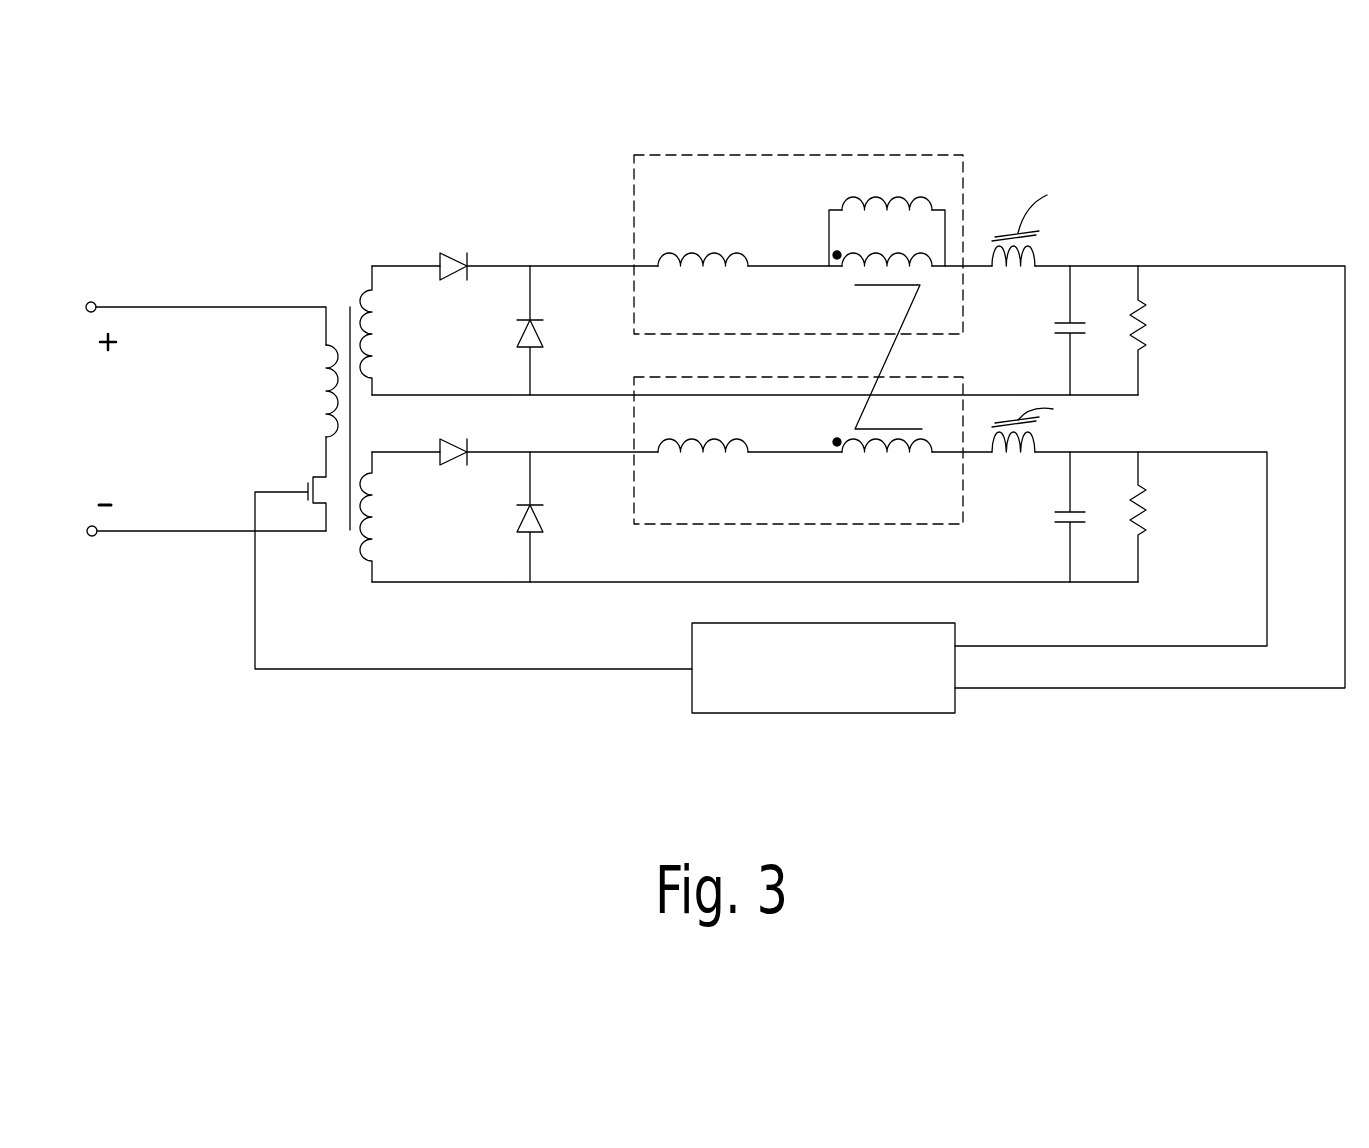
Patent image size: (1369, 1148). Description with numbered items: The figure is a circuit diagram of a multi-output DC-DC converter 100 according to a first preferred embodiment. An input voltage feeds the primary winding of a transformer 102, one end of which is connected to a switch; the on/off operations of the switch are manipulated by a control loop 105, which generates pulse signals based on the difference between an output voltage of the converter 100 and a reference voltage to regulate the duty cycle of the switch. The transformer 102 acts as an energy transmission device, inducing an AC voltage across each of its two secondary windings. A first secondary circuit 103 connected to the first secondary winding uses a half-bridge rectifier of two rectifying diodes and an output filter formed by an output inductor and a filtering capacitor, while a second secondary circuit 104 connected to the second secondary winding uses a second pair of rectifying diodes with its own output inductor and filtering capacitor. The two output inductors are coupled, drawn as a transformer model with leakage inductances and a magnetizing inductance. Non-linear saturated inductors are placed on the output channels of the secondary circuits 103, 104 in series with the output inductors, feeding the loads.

The multi-output DC-DC converter 100 is at (701, 407).
The transformer 102 is at (348, 277).
The first secondary circuit 103 is at (517, 257).
The second secondary circuit 104 is at (517, 443).
The control loop 105 is at (705, 638).